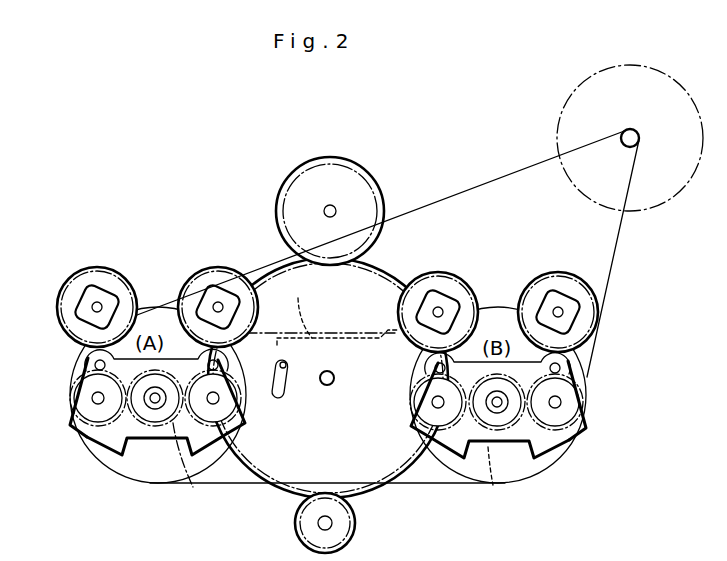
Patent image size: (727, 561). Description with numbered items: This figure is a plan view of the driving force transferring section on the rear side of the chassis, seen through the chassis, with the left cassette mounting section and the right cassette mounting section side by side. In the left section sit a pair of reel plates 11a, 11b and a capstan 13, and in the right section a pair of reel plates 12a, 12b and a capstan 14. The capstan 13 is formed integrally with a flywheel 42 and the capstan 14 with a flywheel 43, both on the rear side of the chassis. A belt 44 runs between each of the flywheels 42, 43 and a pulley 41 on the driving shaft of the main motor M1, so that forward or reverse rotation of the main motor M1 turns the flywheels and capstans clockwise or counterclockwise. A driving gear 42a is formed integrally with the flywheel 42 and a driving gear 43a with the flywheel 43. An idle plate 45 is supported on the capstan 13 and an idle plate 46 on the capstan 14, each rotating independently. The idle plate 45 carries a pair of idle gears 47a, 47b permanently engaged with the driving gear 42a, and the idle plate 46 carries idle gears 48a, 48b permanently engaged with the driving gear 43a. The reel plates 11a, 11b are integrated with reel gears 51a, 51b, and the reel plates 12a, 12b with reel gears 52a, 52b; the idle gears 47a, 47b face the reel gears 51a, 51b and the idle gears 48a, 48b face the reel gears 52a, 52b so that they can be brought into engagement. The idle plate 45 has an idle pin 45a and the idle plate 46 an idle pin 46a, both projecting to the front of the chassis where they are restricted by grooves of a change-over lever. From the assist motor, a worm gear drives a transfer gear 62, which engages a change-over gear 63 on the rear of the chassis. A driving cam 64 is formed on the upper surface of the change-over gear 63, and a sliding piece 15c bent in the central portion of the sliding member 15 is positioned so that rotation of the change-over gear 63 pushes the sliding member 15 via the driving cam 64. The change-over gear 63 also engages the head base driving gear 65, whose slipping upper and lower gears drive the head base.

The sliding member 15 is at (387, 331).
The sliding piece 15c is at (337, 317).
The change-over gear 63 is at (415, 467).
The transfer gear 62 is at (378, 188).
The head base driving gear 65 is at (358, 518).
The pulley 41 is at (640, 138).
The main motor M1 is at (645, 210).
The belt 44 is at (617, 250).
The reel gear 51a is at (110, 265).
The reel gear 51b is at (242, 267).
The reel gear 52a is at (473, 283).
The reel gear 52b is at (562, 272).
The reel plate 11a is at (83, 310).
The reel plate 11b is at (210, 302).
The reel plate 12a is at (433, 293).
The reel plate 12b is at (570, 313).
The flywheel 42 is at (122, 463).
The driving gear 42a is at (197, 467).
The flywheel 43 is at (540, 468).
The driving gear 43a is at (474, 481).
The capstan 13 is at (150, 408).
The capstan 14 is at (500, 410).
The idle plate 45 is at (95, 455).
The idle pin 45a is at (286, 361).
The idle plate 46 is at (570, 453).
The idle pin 46a is at (436, 368).
The idle gear 47a is at (65, 393).
The idle gear 47b is at (240, 410).
The idle gear 48a is at (408, 397).
The idle gear 48b is at (585, 395).
The driving cam 64 is at (287, 393).